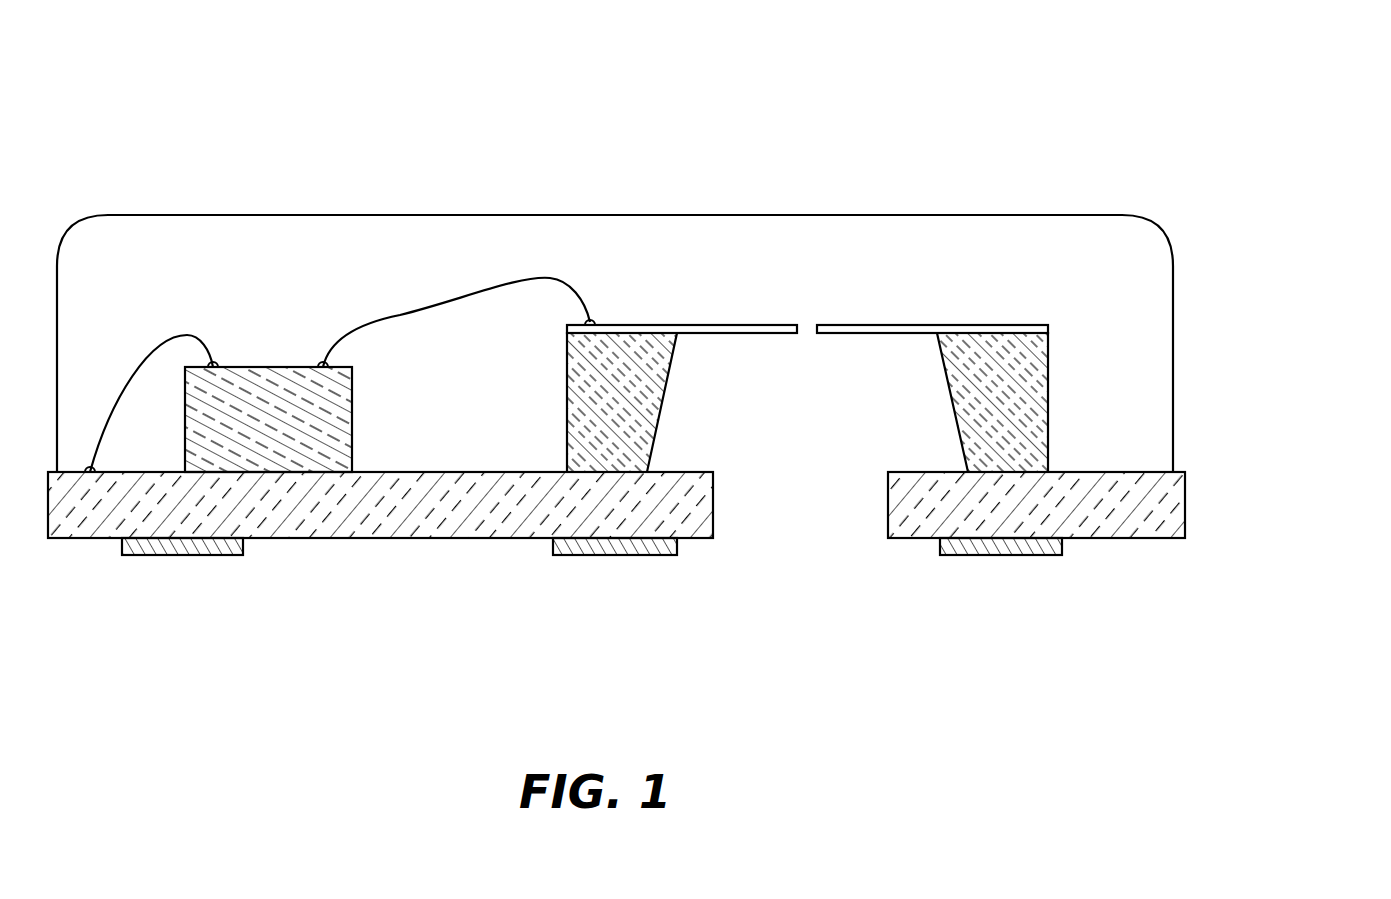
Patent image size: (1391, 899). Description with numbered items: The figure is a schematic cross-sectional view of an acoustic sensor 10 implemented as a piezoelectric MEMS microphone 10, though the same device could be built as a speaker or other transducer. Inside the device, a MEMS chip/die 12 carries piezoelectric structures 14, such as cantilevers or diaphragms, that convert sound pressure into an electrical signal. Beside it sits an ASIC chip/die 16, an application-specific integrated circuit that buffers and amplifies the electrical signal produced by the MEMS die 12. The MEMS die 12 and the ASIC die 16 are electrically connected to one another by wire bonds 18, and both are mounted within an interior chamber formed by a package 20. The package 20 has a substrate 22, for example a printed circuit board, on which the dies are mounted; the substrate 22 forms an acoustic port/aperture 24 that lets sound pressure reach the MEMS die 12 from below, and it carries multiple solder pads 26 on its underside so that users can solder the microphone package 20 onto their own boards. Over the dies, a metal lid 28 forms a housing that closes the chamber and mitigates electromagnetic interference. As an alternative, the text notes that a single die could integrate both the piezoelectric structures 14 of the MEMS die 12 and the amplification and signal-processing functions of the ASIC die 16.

The acoustic sensor 10 is at (747, 127).
The MEMS chip/die 12 is at (1048, 378).
The piezoelectric structures 14 is at (903, 325).
The ASIC chip/die 16 is at (267, 367).
The wire bonds 18 is at (467, 298).
The package 20 is at (1189, 238).
The substrate 22 is at (1103, 538).
The acoustic port/aperture 24 is at (797, 552).
The solder pads 26 is at (177, 555).
The metal lid 28 is at (640, 215).